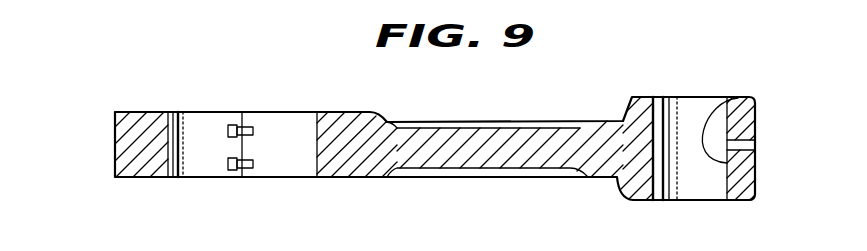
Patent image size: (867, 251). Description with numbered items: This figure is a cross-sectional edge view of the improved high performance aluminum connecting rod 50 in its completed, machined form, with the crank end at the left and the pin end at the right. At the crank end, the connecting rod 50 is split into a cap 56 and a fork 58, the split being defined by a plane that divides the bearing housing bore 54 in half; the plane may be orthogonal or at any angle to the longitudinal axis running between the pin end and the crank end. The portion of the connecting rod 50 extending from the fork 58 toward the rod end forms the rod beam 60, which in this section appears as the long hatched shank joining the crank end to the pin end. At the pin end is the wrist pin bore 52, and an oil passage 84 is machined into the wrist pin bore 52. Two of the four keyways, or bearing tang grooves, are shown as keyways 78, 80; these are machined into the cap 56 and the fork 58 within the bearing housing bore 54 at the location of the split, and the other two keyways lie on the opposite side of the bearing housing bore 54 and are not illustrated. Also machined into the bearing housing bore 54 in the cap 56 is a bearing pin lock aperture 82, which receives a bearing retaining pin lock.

The improved high performance aluminum connecting rod 50 is at (105, 166).
The wrist pin bore 52 is at (738, 98).
The bearing housing bore 54 is at (312, 130).
The cap 56 is at (133, 118).
The fork 58 is at (290, 167).
The rod beam 60 is at (465, 157).
The keyway 78 is at (230, 132).
The keyway 80 is at (233, 170).
The bearing pin lock aperture 82 is at (158, 141).
The oil passage 84 is at (742, 148).